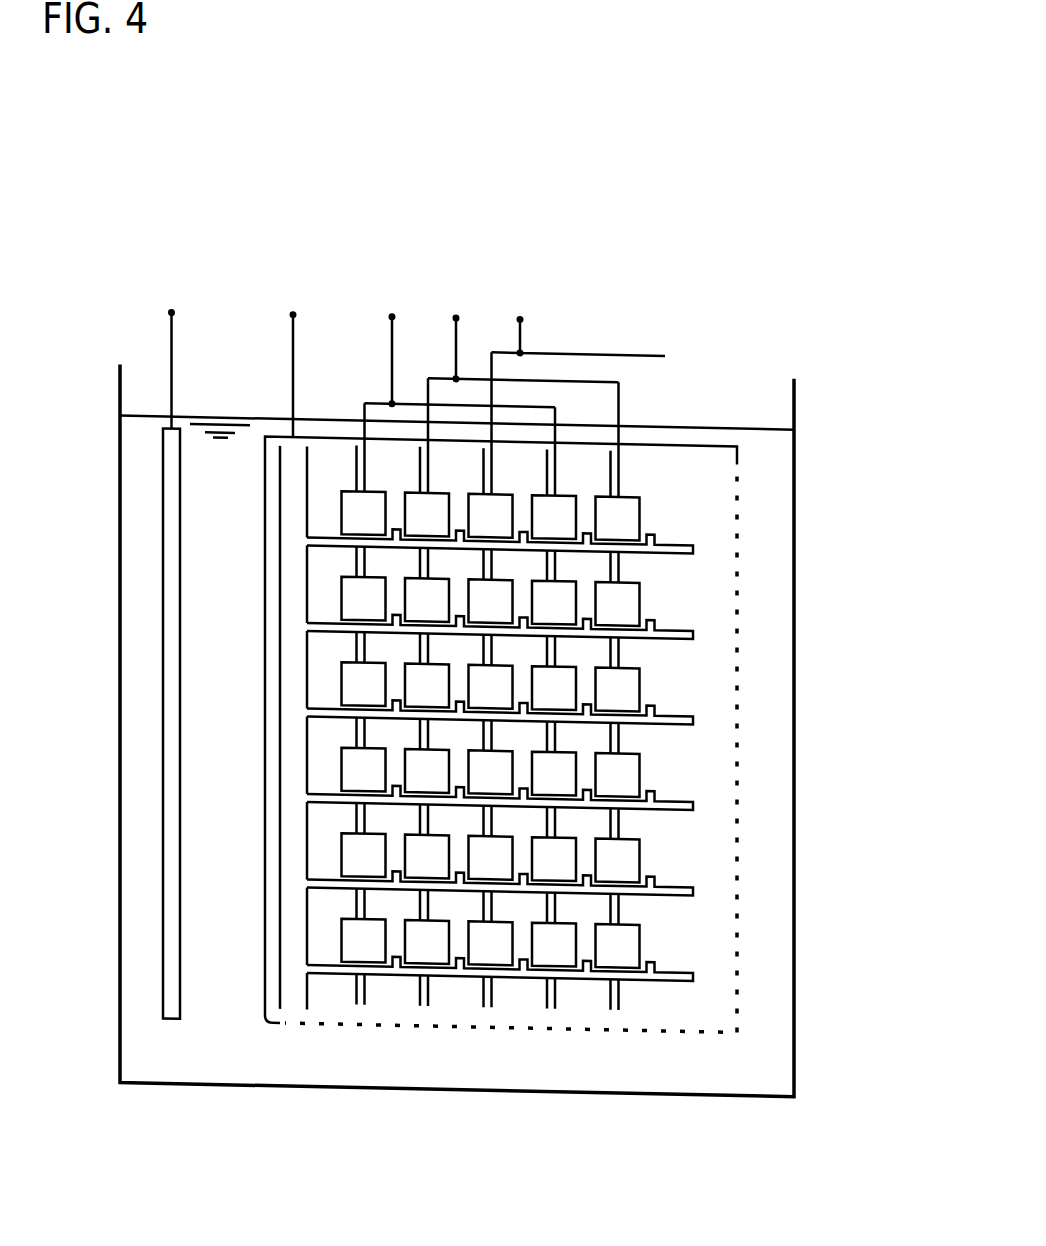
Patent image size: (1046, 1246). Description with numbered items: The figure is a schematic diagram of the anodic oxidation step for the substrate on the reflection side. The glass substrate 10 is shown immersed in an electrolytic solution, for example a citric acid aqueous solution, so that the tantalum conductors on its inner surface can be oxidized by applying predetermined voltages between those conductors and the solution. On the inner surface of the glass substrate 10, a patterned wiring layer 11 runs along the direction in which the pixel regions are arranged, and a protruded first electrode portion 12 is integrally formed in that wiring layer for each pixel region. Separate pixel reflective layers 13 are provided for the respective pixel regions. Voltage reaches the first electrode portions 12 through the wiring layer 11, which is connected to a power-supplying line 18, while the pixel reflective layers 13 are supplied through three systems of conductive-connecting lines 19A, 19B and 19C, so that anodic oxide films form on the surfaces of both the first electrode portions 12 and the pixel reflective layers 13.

The glass substrate 10 is at (687, 444).
The wiring layer 11 is at (672, 985).
The first electrode portion 12 is at (645, 877).
The pixel reflective layer 13 is at (643, 598).
The power-supplying line 18 is at (293, 315).
The conductive-connecting line 19A is at (392, 315).
The conductive-connecting line 19B is at (455, 318).
The conductive-connecting line 19C is at (520, 320).